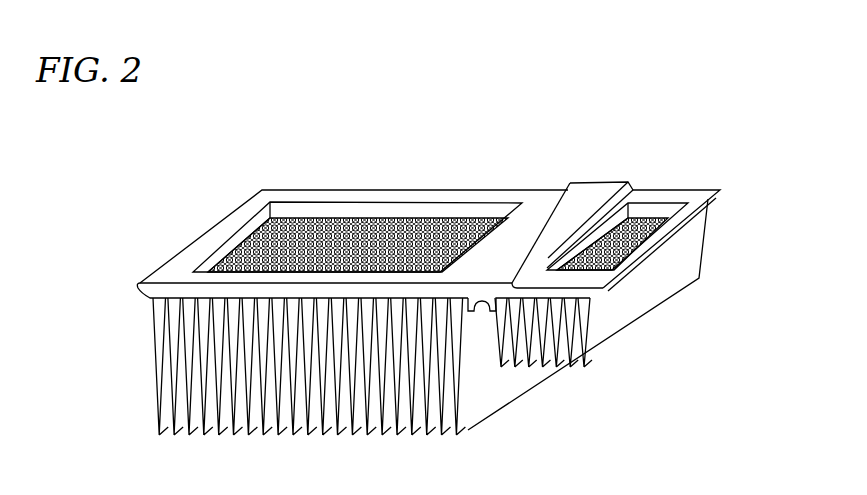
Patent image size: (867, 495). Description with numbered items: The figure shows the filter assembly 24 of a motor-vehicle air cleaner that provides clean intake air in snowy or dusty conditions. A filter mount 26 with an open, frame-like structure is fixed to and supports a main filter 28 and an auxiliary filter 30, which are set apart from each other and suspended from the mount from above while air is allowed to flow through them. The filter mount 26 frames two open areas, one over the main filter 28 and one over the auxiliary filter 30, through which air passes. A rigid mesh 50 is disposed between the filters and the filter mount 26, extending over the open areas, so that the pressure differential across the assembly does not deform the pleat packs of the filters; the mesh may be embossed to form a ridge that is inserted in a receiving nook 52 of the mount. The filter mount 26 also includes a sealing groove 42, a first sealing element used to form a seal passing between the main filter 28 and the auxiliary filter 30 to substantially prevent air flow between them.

The filter assembly 24 is at (168, 228).
The filter mount 26 is at (680, 190).
The main filter 28 is at (333, 375).
The auxiliary filter 30 is at (552, 343).
The sealing groove 42 is at (481, 297).
The rigid mesh 50 is at (390, 220).
The receiving nook 52 is at (562, 186).